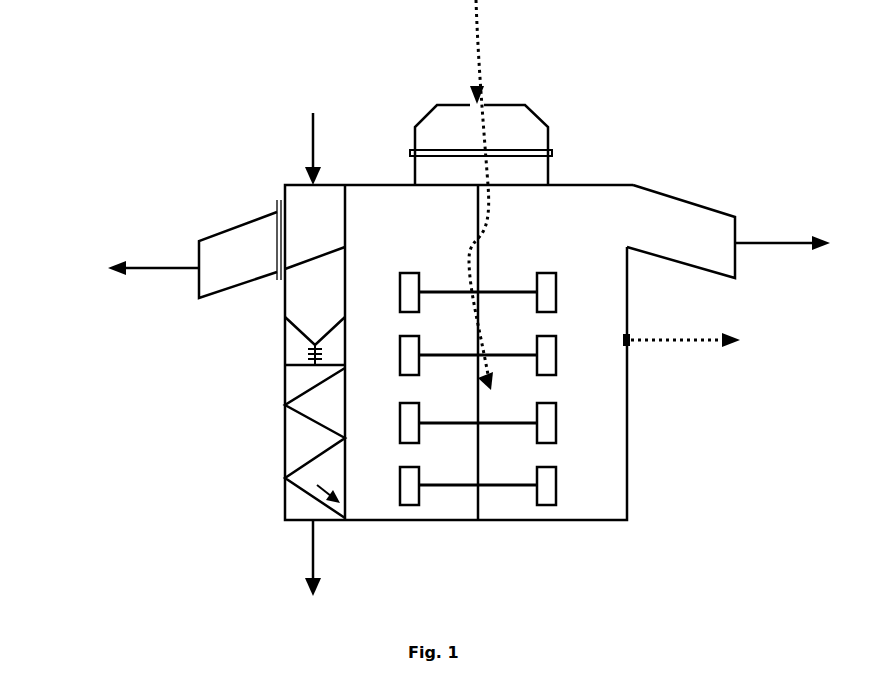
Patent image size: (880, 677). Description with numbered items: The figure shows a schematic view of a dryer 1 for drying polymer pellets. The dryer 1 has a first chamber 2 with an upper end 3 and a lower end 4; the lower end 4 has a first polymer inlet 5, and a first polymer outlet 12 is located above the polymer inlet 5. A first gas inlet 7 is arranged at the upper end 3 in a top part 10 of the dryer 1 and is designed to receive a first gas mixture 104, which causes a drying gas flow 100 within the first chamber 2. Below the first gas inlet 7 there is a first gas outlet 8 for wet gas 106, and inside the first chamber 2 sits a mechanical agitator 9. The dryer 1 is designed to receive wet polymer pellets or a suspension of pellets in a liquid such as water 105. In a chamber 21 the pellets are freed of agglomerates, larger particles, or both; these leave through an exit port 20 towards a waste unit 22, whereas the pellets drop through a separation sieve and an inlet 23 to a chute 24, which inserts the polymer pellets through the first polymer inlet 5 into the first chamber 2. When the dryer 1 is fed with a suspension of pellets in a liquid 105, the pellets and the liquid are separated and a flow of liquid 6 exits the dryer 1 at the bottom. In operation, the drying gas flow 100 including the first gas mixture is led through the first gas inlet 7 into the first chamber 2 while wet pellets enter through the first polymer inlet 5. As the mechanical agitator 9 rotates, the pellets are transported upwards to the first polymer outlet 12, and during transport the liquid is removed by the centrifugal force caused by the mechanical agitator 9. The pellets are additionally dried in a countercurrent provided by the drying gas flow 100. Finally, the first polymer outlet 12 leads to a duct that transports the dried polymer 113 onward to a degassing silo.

The dryer 1 is at (156, 104).
The first chamber 2 is at (600, 228).
The upper end 3 is at (515, 103).
The lower end 4 is at (459, 520).
The first polymer inlet 5 is at (317, 488).
The flow of liquid 6 is at (310, 558).
The first gas inlet 7 is at (470, 103).
The first gas outlet 8 is at (628, 338).
The mechanical agitator 9 is at (548, 487).
The top part 10 is at (443, 135).
The first polymer outlet 12 is at (627, 218).
The exit port 20 is at (243, 252).
The chamber 21 is at (307, 212).
The waste unit 22 is at (153, 270).
The inlet 23 is at (310, 358).
The chute 24 is at (297, 432).
The drying gas flow 100 is at (490, 172).
The first gas mixture 104 is at (478, 33).
The suspension of pellets in a liquid 105 is at (313, 120).
The wet gas 106 is at (665, 343).
The dried polymer 113 is at (775, 243).